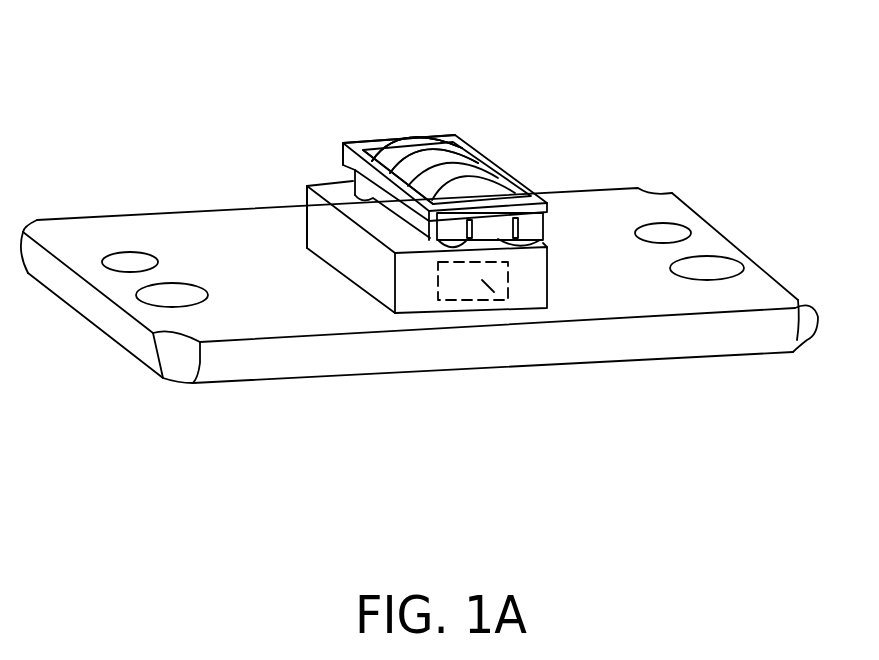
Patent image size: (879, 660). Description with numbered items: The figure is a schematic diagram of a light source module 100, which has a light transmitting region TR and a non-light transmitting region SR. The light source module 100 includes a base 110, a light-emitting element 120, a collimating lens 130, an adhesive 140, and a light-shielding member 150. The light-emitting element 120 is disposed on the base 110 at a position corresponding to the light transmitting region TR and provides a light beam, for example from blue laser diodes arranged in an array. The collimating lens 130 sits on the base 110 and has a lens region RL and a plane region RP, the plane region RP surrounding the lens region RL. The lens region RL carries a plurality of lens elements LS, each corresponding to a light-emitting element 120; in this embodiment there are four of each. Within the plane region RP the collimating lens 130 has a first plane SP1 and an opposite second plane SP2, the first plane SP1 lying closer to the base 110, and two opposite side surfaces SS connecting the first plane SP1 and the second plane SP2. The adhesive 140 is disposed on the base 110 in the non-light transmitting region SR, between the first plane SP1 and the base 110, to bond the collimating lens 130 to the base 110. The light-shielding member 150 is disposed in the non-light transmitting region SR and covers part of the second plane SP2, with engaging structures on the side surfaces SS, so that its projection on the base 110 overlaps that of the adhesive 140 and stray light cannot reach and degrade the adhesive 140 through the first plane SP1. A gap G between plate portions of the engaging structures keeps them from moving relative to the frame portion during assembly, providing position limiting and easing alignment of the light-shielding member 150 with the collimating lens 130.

The light source module 100 is at (823, 502).
The base 110 is at (528, 282).
The light-emitting element 120 is at (499, 299).
The collimating lens 130 is at (458, 167).
The adhesive 140 is at (452, 243).
The light-shielding member 150 is at (342, 163).
The gap G is at (494, 292).
The side surfaces SS is at (388, 135).
The lens elements LS is at (378, 162).
The light transmitting region TR is at (408, 137).
The non-light transmitting region SR is at (358, 150).
The plane region RP is at (380, 159).
The lens region RL is at (432, 157).
The first plane SP1 is at (441, 248).
The second plane SP2 is at (506, 209).